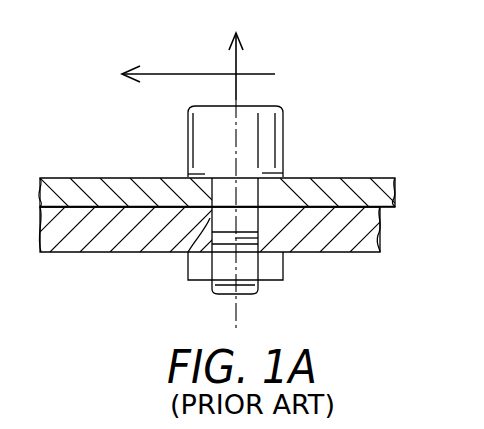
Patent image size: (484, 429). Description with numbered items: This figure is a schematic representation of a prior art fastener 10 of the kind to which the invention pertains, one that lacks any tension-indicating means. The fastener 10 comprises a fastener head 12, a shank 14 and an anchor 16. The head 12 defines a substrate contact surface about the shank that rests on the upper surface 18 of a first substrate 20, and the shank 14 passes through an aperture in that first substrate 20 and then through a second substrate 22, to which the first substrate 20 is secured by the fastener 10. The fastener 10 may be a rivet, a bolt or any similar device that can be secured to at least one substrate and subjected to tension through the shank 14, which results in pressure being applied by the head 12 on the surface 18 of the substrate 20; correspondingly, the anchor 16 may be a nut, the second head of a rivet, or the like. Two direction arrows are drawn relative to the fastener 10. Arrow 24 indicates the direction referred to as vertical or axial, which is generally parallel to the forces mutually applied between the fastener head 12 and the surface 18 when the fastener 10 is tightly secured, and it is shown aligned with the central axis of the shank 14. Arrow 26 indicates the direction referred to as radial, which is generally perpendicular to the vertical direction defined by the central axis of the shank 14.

The fastener 10 is at (295, 152).
The fastener head 12 is at (283, 125).
The shank 14 is at (185, 251).
The anchor 16 is at (275, 281).
The upper surface 18 is at (100, 178).
The first substrate 20 is at (396, 190).
The second substrate 22 is at (383, 232).
The arrow 24 is at (240, 58).
The arrow 26 is at (180, 73).